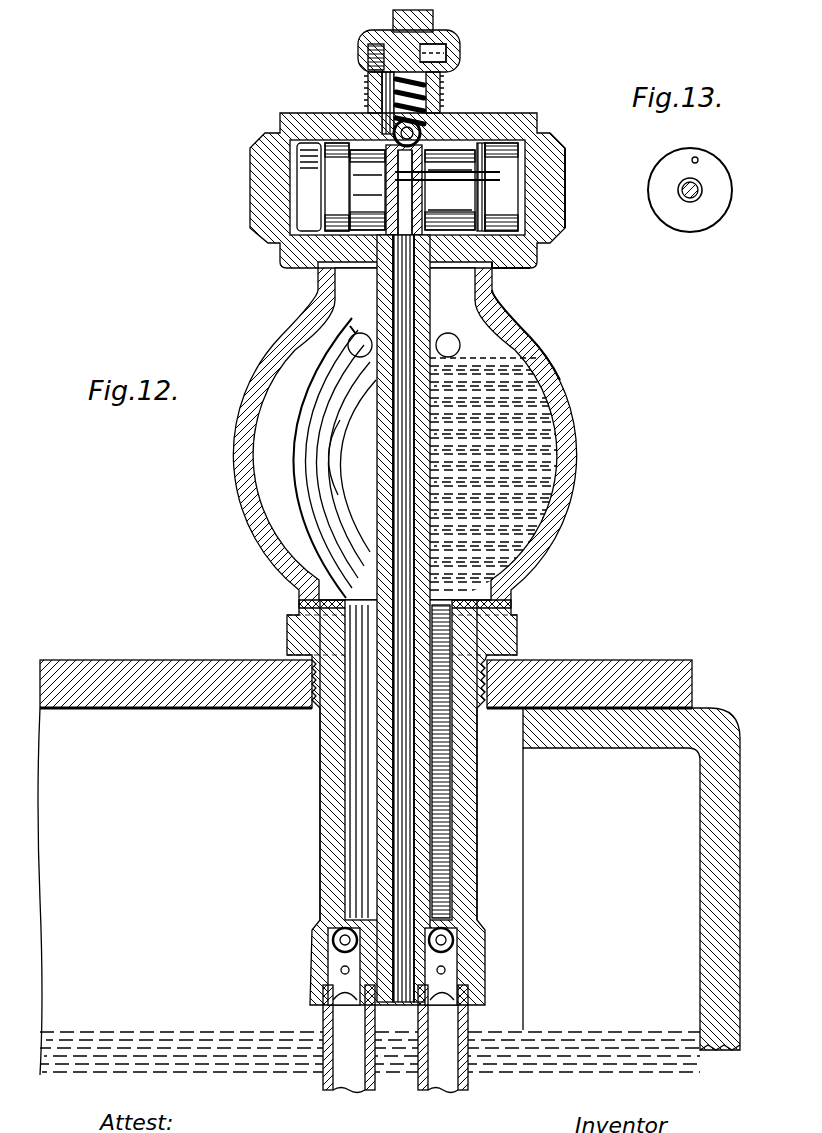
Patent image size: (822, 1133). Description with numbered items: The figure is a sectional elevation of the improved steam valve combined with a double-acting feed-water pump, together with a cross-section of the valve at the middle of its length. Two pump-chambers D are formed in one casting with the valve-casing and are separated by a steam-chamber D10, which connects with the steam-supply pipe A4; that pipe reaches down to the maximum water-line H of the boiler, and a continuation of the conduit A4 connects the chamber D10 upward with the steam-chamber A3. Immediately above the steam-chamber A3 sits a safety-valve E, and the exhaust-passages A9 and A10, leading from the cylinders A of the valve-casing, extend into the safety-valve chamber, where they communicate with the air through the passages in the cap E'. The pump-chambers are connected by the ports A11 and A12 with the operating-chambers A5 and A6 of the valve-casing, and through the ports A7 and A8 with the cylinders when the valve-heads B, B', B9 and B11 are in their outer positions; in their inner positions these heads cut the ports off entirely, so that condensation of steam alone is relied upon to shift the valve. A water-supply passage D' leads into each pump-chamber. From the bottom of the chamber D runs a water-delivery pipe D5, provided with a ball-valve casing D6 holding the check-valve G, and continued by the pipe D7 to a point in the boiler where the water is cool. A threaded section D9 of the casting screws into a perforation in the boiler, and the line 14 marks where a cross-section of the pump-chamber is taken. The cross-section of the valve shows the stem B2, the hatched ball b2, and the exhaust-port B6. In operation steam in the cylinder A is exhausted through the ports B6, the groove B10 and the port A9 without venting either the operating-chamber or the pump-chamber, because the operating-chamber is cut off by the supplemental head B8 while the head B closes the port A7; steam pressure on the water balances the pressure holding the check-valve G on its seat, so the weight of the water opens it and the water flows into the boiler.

In FIG. 12, the cap E' is at (420, 41).
In FIG. 12, the exhaust-passage A10 is at (382, 112).
In FIG. 12, the safety-valve E is at (413, 98).
In FIG. 12, the valve-head B' is at (366, 106).
In FIG. 12, the cylinder A is at (490, 150).
In FIG. 12, the operating-chamber A5 is at (566, 190).
In FIG. 12, the port A11 is at (520, 262).
In FIG. 12, the operating-chamber A6 is at (309, 187).
In FIG. 12, the valve-head B9 is at (337, 187).
In FIG. 12, the valve-head B11 is at (367, 190).
In FIG. 12, the exhaust-passage A9 is at (470, 135).
In FIG. 12, the ball b2 is at (420, 148).
In FIG. 13, the ball b2 is at (696, 198).
In FIG. 12, the valve-stem B2 is at (450, 190).
In FIG. 13, the valve-stem B2 is at (703, 190).
In FIG. 12, the valve-head B is at (447, 201).
In FIG. 13, the valve-head B is at (702, 190).
In FIG. 12, the supplemental head B8 is at (501, 187).
In FIG. 12, the groove B10 is at (512, 135).
In FIG. 12, the port A12 is at (314, 278).
In FIG. 12, the steam-chamber A3 is at (505, 282).
In FIG. 12, the port A7 is at (508, 302).
In FIG. 12, the pump-chamber D is at (495, 474).
In FIG. 12, the water-supply passage D' is at (404, 345).
In FIG. 12, the port A8 is at (356, 318).
In FIG. 12, the threaded section D9 is at (505, 660).
In FIG. 12, the steam-supply pipe A4 is at (400, 795).
In FIG. 12, the water-delivery pipe D5 is at (345, 728).
In FIG. 12, the steam-chamber D10 is at (395, 400).
In FIG. 12, the ball-valve casing D6 is at (333, 965).
In FIG. 12, the ball-valve G is at (333, 932).
In FIG. 12, the delivery-pipe continuation D7 is at (395, 1039).
In FIG. 12, the section line 14 is at (612, 508).
In FIG. 12, the water-line H is at (156, 660).
In FIG. 13, the exhaust-port B6 is at (699, 160).